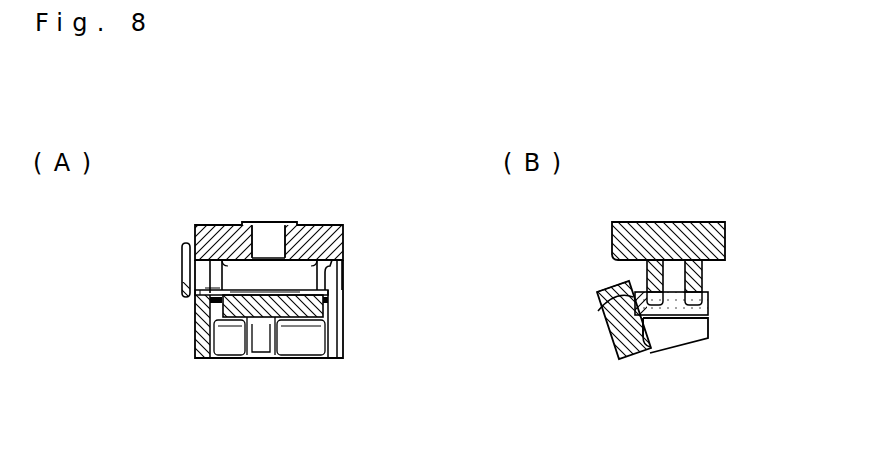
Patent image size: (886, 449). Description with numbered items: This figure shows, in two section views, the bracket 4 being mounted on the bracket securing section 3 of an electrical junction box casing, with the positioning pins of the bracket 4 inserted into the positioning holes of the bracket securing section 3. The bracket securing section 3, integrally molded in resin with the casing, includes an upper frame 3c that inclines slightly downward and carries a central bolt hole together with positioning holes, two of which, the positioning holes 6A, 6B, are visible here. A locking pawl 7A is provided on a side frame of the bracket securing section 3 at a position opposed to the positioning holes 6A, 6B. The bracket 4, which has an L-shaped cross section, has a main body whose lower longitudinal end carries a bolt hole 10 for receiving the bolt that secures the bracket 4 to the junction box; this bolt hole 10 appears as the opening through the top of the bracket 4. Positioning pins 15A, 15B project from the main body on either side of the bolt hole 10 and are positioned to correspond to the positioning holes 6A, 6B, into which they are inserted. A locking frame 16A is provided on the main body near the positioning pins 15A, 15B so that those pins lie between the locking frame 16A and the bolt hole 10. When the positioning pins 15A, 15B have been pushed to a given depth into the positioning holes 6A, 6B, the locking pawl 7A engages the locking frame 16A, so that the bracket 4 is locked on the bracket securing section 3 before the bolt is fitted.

The bracket securing section 3 is at (197, 360).
The upper frame 3c is at (612, 315).
The bracket 4 is at (342, 226).
The positioning hole 6A is at (200, 343).
The positioning hole 6B is at (323, 308).
The locking pawl 7A is at (196, 300).
The bolt hole 10 is at (298, 222).
The positioning pin 15A is at (212, 270).
The positioning pin 15B is at (332, 272).
The locking frame 16A is at (182, 268).